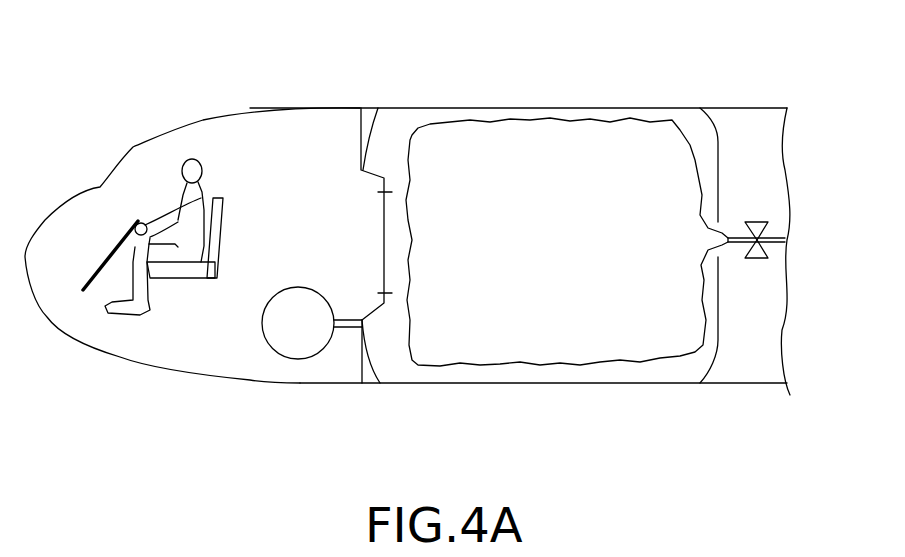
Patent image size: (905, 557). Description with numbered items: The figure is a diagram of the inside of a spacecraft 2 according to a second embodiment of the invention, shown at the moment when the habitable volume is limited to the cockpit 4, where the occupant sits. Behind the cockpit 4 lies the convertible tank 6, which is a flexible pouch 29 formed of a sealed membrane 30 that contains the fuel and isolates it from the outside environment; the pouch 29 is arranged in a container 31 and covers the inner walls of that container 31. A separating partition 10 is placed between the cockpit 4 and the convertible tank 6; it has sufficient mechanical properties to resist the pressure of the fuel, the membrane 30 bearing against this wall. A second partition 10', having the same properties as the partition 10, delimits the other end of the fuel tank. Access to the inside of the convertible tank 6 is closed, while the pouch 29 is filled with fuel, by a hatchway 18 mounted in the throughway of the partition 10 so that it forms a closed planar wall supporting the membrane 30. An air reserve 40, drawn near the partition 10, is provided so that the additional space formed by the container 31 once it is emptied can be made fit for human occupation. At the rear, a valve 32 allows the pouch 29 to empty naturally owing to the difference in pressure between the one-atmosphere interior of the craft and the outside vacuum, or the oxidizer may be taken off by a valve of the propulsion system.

The spacecraft 2 is at (438, 94).
The cockpit 4 is at (155, 189).
The convertible tank 6 is at (593, 108).
The separating partition 10 is at (352, 275).
The partition 10' is at (743, 275).
The hatchway 18 is at (385, 253).
The flexible pouch 29 is at (590, 219).
The sealed membrane 30 is at (675, 108).
The container 31 is at (581, 368).
The valve 32 is at (758, 222).
The air reserve 40 is at (302, 343).